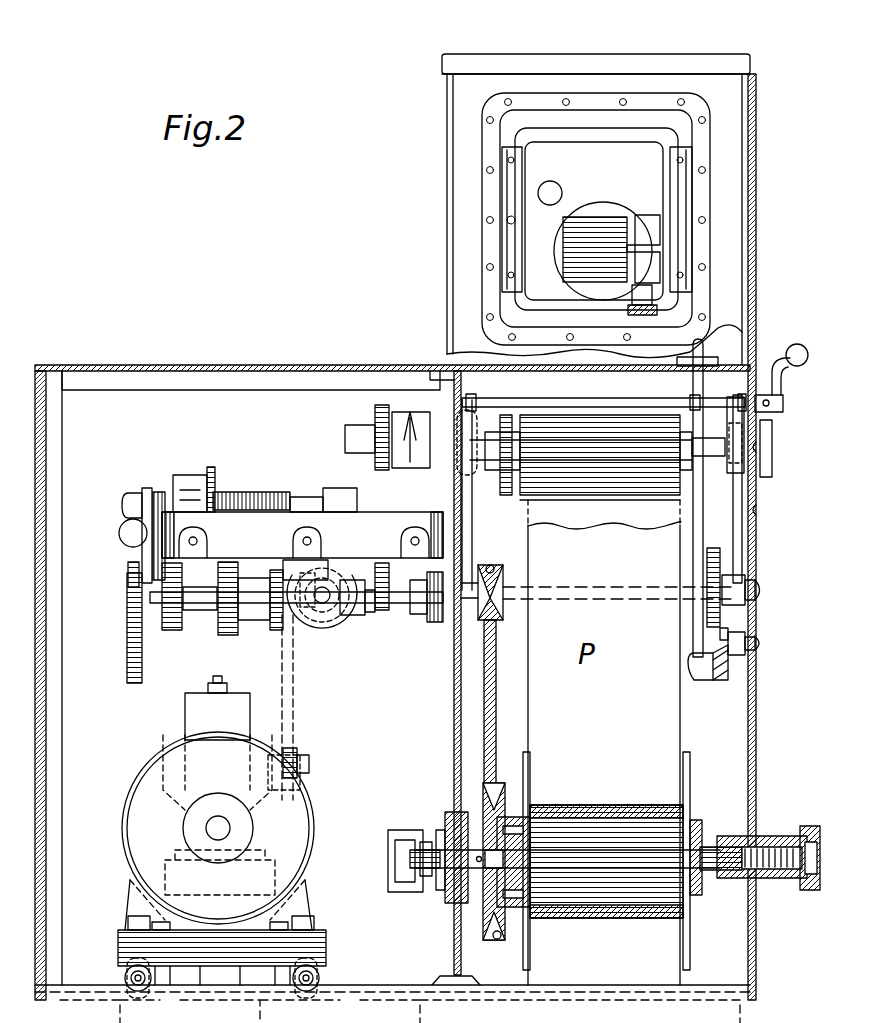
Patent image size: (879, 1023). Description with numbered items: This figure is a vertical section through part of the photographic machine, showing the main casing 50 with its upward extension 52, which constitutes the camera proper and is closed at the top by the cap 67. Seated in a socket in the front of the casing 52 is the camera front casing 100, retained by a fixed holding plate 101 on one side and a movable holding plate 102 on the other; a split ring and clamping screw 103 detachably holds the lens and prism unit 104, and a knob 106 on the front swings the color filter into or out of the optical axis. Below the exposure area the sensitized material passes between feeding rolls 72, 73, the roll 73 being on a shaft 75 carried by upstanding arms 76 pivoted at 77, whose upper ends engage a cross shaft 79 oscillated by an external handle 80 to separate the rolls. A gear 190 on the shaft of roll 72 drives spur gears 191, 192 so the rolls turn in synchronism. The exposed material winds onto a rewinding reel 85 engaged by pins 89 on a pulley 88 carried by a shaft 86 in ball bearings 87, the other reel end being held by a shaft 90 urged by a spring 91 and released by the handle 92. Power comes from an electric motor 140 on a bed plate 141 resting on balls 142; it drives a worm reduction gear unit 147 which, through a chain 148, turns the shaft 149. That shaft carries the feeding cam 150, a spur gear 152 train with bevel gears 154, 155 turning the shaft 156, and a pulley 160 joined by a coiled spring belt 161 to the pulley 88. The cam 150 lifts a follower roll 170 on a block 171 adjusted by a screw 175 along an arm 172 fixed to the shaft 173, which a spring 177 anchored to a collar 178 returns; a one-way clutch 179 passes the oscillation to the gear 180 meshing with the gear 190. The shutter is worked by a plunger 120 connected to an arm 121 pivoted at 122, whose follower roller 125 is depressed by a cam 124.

The cabinet top 67 is at (535, 63).
The upward extension 52 is at (756, 222).
The casing 100 is at (643, 128).
The fixed overlying holding plate 101 is at (686, 204).
The movable overlying holding plate 102 is at (510, 185).
The split ring and clamping screw 103 is at (630, 310).
The lens and prism unit 104 is at (612, 226).
The knob 106 is at (557, 185).
The main body or casing 50 is at (254, 358).
The upstanding arms 76 is at (462, 553).
The cross shaft 79 is at (606, 398).
The feeding roll 73 is at (588, 455).
The feeding roll 72 is at (618, 496).
The shaft 75 is at (718, 458).
The spur gear 192 is at (500, 470).
The spur gear 191 is at (462, 530).
The gear 190 is at (385, 410).
The gear 180 is at (378, 478).
The one-way driving clutch 179 is at (365, 500).
The shaft 173 is at (310, 512).
The spring 177 is at (260, 495).
The collar 178 is at (212, 477).
The arm 172 is at (148, 487).
The block 171 is at (128, 503).
The adjusting screw 175 is at (119, 530).
The follower roll 170 is at (128, 572).
The feeding cam 150 is at (127, 630).
The bevel gear 154 is at (300, 570).
The spur gear 152 is at (224, 625).
The shaft 156 is at (322, 604).
The bevel gear 155 is at (345, 622).
The shaft 149 is at (412, 606).
The pulley 160 is at (506, 575).
The coiled spring belt 161 is at (484, 685).
The operating plunger or rod 120 is at (703, 512).
The handle 80 is at (788, 348).
The cam 124 is at (720, 562).
The pivot 77 is at (757, 586).
The follower roller 125 is at (728, 634).
The pivot 122 is at (757, 648).
The arm 121 is at (724, 668).
The worm reduction gear unit 147 is at (185, 711).
The electric motor 140 is at (304, 840).
The chain 148 is at (294, 708).
The bed plate 141 is at (326, 945).
The balls 142 is at (125, 978).
The rewinding reel 85 is at (690, 790).
The pins 89 is at (515, 826).
The pulley 88 is at (490, 925).
The ball bearings 87 is at (426, 842).
The shaft 86 is at (438, 876).
The shaft 90 is at (708, 844).
The spring 91 is at (755, 870).
The external handle 92 is at (808, 826).